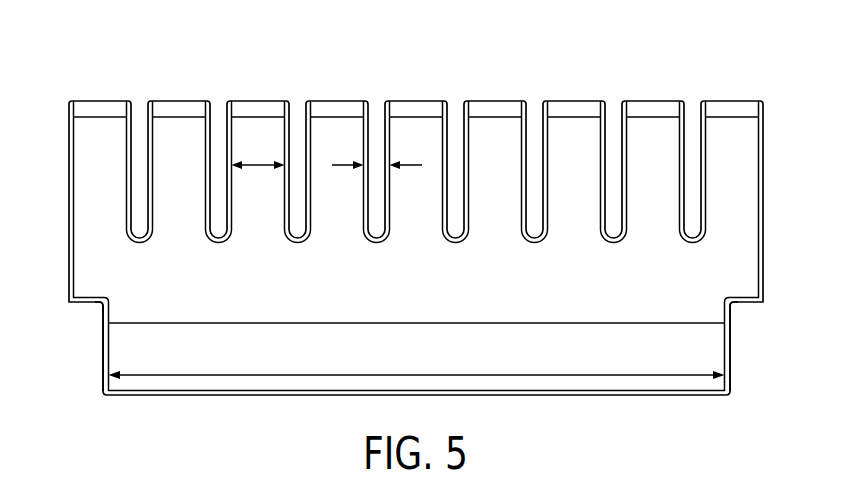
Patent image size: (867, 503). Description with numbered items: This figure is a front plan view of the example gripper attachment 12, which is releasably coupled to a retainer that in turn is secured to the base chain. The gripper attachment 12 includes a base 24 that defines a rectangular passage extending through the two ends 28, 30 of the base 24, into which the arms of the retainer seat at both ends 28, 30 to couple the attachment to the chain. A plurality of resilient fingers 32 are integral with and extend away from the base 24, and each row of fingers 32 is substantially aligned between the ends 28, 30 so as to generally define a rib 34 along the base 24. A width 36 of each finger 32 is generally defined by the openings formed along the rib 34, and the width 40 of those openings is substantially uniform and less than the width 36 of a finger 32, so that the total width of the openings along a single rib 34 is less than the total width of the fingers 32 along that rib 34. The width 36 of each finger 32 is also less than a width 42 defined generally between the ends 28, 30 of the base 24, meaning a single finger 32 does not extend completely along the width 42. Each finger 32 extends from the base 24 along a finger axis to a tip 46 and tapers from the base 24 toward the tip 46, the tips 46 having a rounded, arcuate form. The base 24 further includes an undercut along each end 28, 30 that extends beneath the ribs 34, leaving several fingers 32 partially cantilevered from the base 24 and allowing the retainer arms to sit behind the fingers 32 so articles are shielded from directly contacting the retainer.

The gripper attachment 12 is at (52, 172).
The base 24 is at (432, 358).
The end of the base 28 is at (732, 362).
The end of the base 30 is at (103, 362).
The resilient finger 32 is at (100, 94).
The rib 34 is at (432, 276).
The width of each finger 36 is at (257, 168).
The width of the openings 40 is at (376, 163).
The width of the base 42 is at (469, 374).
The tip 46 is at (180, 100).